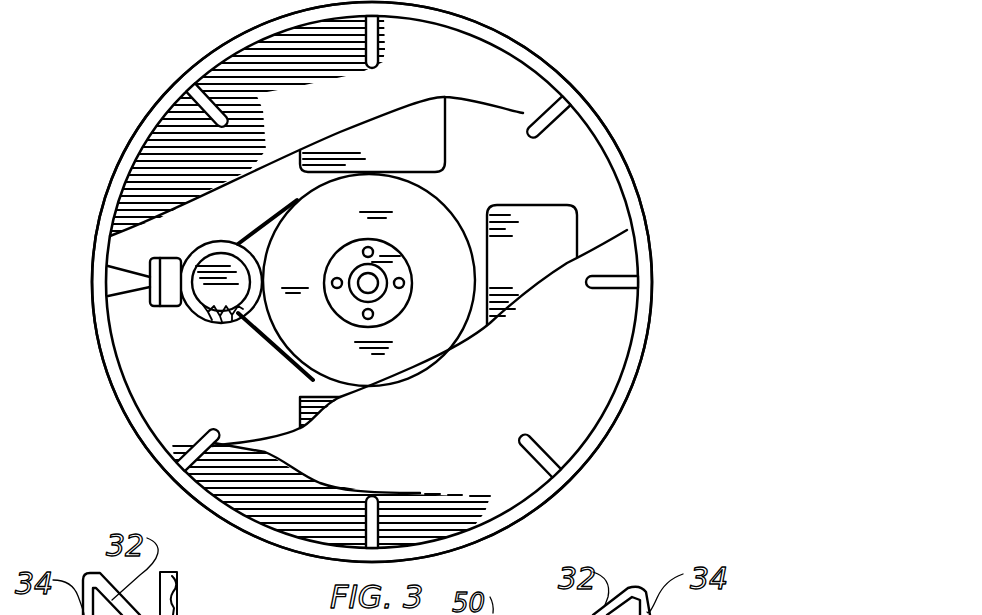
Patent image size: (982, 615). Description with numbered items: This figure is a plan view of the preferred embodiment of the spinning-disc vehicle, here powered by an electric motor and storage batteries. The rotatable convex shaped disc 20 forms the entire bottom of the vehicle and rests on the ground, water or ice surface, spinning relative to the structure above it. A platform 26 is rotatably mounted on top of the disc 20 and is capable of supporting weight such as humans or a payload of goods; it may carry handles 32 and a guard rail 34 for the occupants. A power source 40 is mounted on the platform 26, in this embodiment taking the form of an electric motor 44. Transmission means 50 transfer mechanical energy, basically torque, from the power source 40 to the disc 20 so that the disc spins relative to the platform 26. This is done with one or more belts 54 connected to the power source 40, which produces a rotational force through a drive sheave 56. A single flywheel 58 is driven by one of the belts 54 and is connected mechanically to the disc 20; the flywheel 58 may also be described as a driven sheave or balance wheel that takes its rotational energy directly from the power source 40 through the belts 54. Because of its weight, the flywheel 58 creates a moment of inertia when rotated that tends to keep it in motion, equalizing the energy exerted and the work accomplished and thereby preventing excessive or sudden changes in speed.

The rotatable convex shaped disc 20 is at (602, 444).
The platform 26 is at (573, 360).
The handles 32 is at (171, 107).
The guard rail 34 is at (112, 178).
The power source 40 is at (207, 322).
The electric motor 44 is at (147, 282).
The hub 50 is at (410, 255).
The belts 54 is at (262, 332).
The drive sheave 56 is at (212, 328).
The flywheel 58 is at (322, 208).